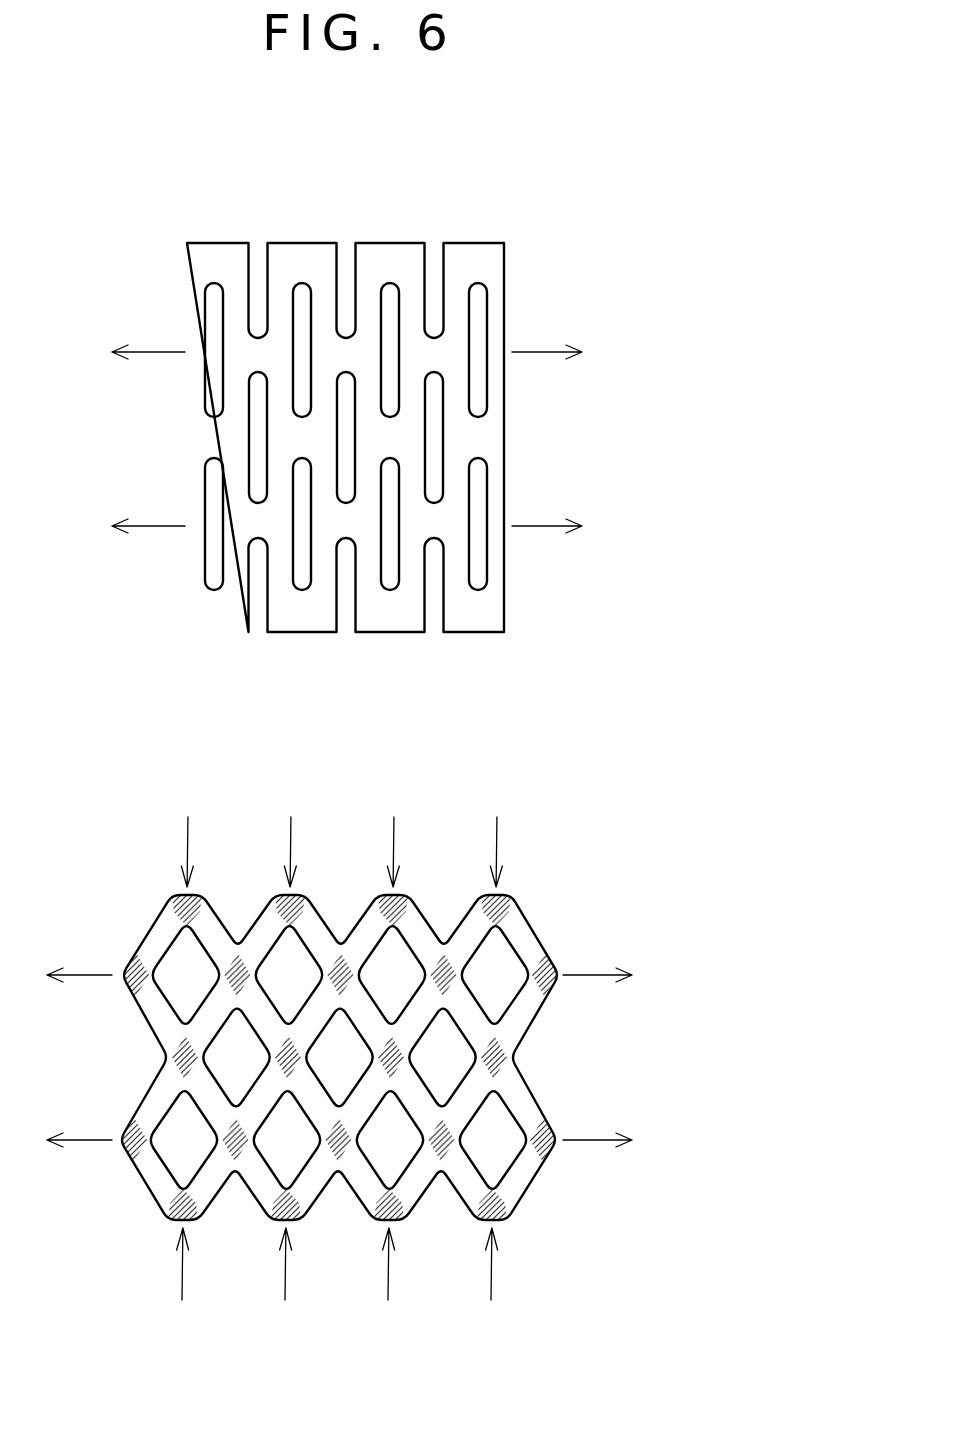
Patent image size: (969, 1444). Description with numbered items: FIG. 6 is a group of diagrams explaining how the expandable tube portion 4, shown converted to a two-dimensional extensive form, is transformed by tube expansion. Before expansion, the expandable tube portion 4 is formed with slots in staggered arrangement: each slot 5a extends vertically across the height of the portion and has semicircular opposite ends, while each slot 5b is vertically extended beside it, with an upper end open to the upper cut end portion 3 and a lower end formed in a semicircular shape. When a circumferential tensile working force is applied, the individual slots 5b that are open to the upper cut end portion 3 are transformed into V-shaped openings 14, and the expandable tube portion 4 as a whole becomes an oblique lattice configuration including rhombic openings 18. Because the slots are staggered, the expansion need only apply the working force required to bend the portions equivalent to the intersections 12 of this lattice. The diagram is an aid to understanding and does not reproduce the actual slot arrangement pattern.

The upper cut end portion 3 is at (200, 243).
The expandable tube portion 4 is at (562, 223).
The slot 5a is at (214, 283).
The slot 5b is at (262, 258).
The intersections 12 is at (435, 356).
The V-shaped openings 14 is at (253, 923).
The rhombic openings 18 is at (307, 940).